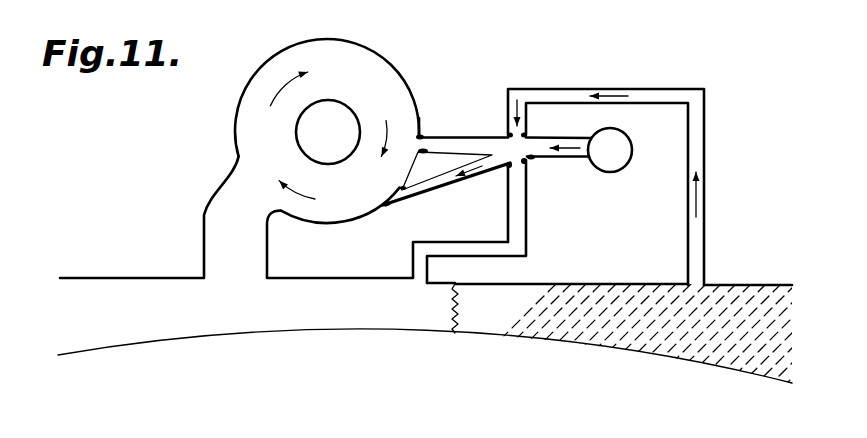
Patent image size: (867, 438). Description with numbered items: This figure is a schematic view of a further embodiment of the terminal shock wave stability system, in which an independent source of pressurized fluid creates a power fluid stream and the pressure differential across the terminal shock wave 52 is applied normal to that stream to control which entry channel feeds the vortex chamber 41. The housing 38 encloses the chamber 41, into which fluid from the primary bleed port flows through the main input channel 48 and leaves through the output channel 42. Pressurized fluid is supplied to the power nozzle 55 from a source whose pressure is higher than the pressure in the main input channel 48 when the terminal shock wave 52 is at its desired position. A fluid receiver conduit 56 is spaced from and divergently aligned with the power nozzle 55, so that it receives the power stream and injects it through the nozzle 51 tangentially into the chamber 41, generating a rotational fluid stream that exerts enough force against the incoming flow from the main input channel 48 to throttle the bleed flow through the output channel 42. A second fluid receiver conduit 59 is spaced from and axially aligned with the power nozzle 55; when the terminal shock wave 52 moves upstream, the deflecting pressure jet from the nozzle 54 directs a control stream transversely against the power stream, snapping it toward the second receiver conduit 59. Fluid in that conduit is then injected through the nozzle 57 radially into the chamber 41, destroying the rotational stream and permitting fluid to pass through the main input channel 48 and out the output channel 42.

The vortex chamber housing 38 is at (424, 84).
The vortex chamber 41 is at (268, 133).
The output channel 42 is at (343, 141).
The main input channel 48 is at (233, 237).
The nozzle 51 is at (404, 198).
The terminal shock wave 52 is at (457, 308).
The nozzle 54 is at (520, 172).
The power nozzle 55 is at (534, 157).
The fluid receiver conduit 56 is at (447, 173).
The nozzle 57 is at (425, 137).
The second fluid receiver conduit 59 is at (465, 138).